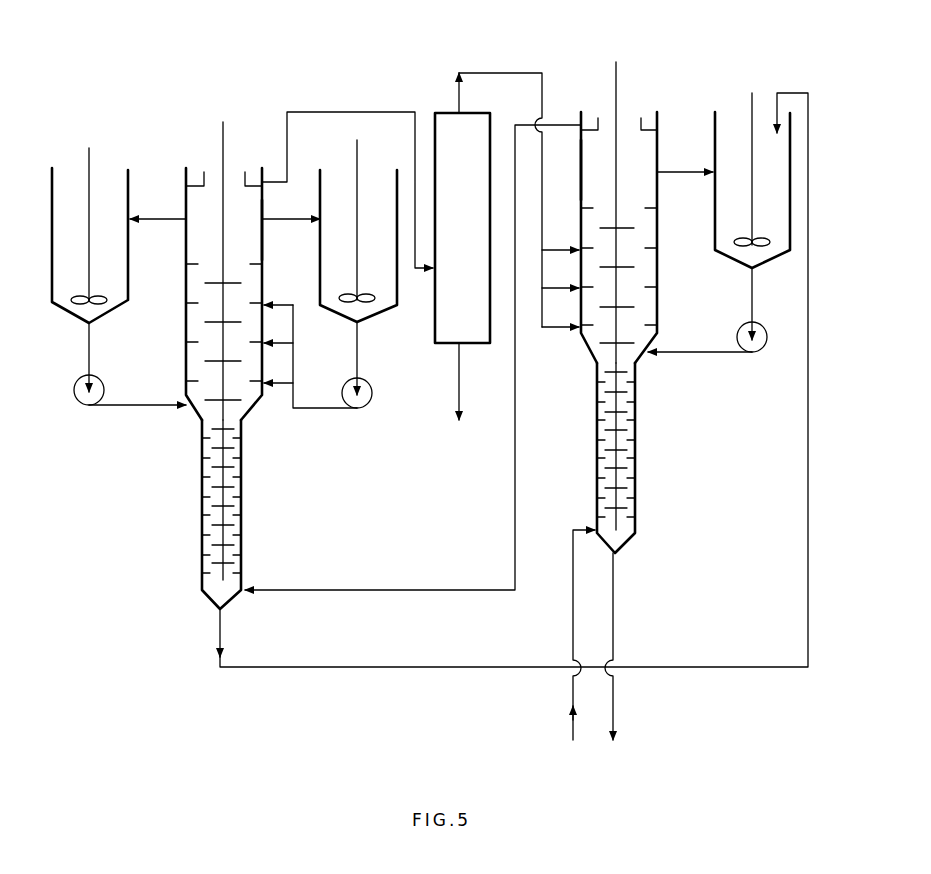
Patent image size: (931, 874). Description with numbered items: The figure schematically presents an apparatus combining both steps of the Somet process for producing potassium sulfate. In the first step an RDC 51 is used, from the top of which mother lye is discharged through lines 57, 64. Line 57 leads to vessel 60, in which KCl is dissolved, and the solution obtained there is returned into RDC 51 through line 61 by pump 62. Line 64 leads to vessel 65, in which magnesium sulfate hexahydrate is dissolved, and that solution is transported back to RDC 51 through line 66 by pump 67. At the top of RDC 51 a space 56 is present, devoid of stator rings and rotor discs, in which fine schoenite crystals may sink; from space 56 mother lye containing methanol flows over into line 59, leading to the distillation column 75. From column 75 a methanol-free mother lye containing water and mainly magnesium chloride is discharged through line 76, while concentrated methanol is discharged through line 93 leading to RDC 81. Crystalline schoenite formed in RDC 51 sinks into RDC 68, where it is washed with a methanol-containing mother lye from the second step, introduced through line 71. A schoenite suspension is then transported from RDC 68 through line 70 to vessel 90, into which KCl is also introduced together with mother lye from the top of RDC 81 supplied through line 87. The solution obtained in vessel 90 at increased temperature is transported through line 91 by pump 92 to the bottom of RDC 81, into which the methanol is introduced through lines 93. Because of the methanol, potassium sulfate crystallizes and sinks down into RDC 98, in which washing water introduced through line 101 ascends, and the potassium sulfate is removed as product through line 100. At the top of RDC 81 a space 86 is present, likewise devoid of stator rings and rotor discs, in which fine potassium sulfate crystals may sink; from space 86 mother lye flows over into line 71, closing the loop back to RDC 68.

The RDC 51 is at (224, 271).
The space 56 is at (247, 230).
The line 57 is at (291, 209).
The line 59 is at (347, 179).
The vessel 60 is at (358, 231).
The line 61 is at (369, 358).
The pump 62 is at (329, 359).
The line 64 is at (158, 209).
The vessel 65 is at (90, 235).
The line 66 is at (102, 357).
The pump 67 is at (118, 392).
The RDC 68 is at (210, 514).
The line 70 is at (514, 368).
The line 71 is at (413, 358).
The distillation column 75 is at (462, 228).
The line 76 is at (472, 381).
The RDC 81 is at (619, 212).
The space 86 is at (597, 170).
The line 87 is at (685, 163).
The vessel 90 is at (752, 180).
The line 91 is at (763, 304).
The pump 92 is at (719, 343).
The lines 93 is at (519, 200).
The RDC 98 is at (629, 458).
The line 100 is at (627, 646).
The line 101 is at (590, 635).